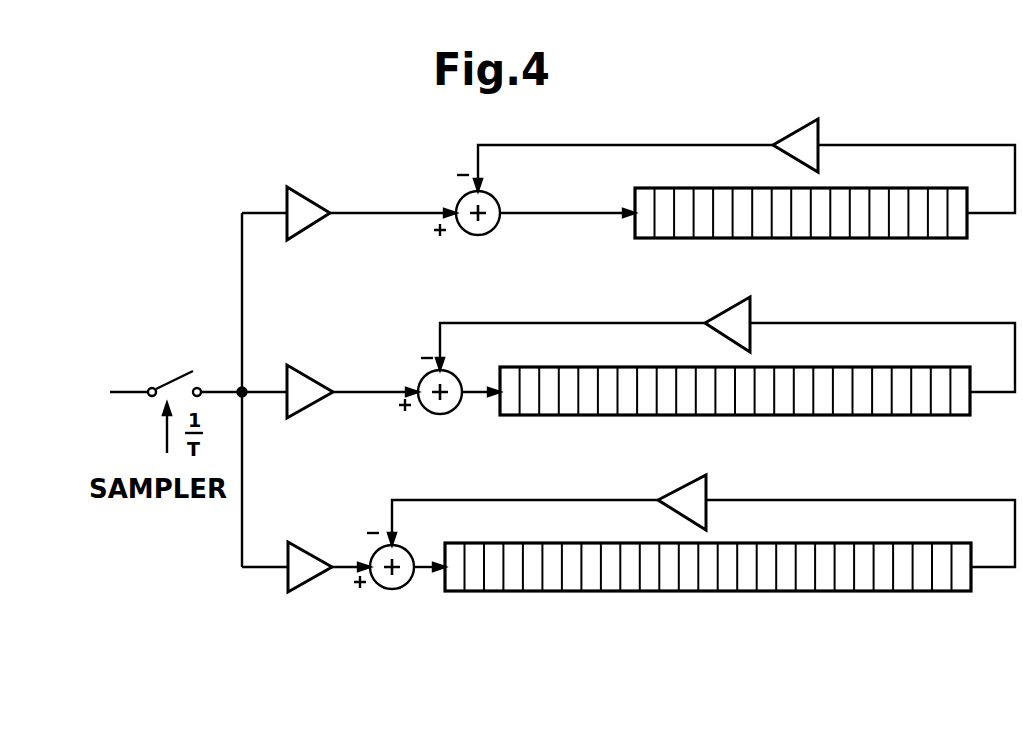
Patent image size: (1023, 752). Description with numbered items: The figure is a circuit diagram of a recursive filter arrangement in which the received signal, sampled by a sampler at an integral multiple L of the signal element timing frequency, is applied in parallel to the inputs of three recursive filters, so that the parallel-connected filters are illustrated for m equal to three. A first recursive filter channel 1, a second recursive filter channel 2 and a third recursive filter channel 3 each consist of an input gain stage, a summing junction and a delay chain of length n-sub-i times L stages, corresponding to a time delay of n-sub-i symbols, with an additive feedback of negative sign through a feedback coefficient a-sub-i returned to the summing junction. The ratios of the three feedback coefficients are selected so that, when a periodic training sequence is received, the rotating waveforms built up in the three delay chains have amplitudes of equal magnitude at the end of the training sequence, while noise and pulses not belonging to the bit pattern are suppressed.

The first recursive filter channel (gain 1-a1, summer, delay line n1·L, feedback gai 1 is at (628, 197).
The second recursive filter channel (gain 1-a2, summer, delay line n2·L, feedback ga 2 is at (628, 371).
The third recursive filter channel (gain 1-a3, summer, delay line n3·L, feedback gai 3 is at (628, 550).